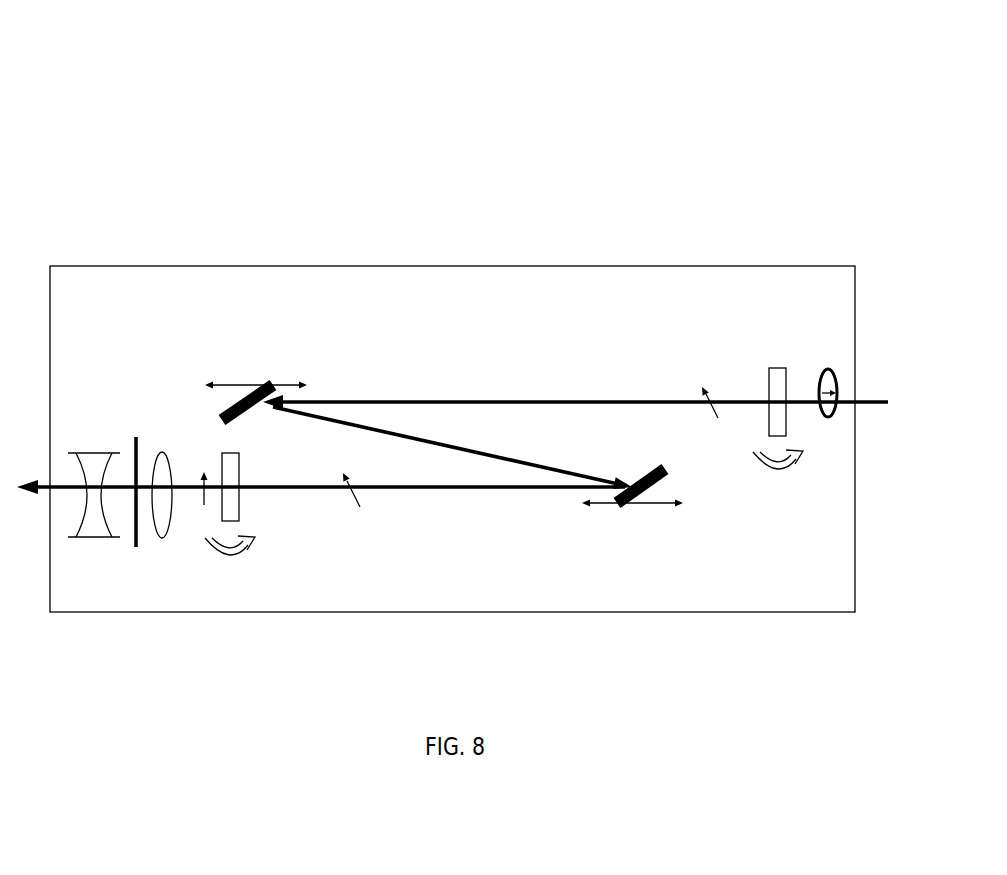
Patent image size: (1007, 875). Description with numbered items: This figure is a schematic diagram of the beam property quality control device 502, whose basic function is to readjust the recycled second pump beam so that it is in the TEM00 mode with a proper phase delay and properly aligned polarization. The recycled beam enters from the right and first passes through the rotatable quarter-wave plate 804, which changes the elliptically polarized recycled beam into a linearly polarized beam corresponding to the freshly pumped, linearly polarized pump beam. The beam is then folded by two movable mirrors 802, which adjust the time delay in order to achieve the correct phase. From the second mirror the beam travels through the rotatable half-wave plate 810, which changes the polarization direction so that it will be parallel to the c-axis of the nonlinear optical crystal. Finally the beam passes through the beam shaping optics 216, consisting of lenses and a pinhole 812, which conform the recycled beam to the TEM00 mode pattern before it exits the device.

The beam property quality control device 502 is at (452, 316).
The beam shaping optics 216 is at (155, 458).
The movable mirror 802 is at (213, 417).
The quarter-wave plate 804 is at (767, 385).
The half-wave plate 810 is at (243, 504).
The pinhole 812 is at (130, 537).